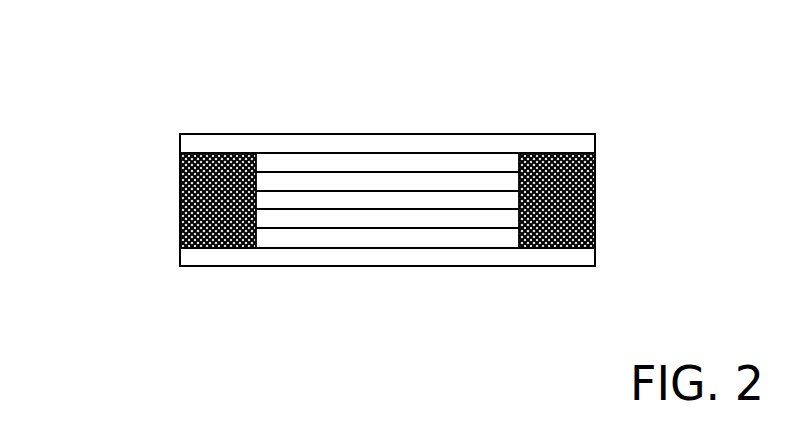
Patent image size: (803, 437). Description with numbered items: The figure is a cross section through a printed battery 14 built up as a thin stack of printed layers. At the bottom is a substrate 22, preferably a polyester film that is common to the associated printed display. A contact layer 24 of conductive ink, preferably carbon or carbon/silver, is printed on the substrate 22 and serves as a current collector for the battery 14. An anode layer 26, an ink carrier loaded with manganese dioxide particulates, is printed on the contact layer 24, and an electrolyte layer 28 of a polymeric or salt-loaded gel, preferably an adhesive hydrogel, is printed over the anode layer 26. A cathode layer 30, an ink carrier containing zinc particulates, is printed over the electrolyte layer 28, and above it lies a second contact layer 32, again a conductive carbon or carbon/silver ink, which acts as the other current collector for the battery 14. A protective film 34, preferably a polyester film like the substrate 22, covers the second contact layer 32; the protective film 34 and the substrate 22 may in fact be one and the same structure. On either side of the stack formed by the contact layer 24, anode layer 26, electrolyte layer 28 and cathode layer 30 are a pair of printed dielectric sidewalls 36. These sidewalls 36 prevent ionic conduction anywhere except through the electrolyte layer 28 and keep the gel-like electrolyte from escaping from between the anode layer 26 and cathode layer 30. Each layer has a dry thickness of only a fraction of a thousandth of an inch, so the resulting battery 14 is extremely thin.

The printed battery 14 is at (581, 88).
The substrate 22 is at (318, 260).
The contact layer 24 is at (295, 243).
The anode layer 26 is at (371, 221).
The electrolyte layer 28 is at (429, 202).
The cathode layer 30 is at (476, 183).
The second contact layer 32 is at (298, 162).
The protective film 34 is at (347, 143).
The printed dielectric sidewalls 36 is at (202, 201).